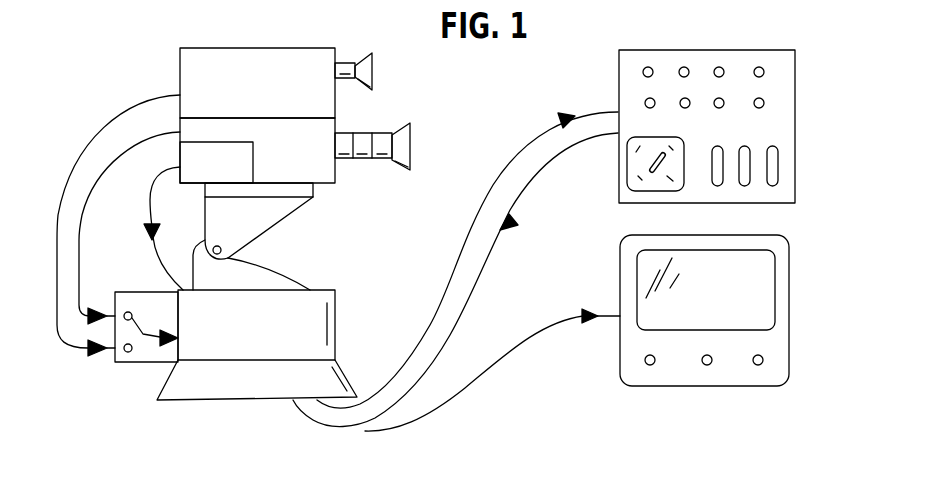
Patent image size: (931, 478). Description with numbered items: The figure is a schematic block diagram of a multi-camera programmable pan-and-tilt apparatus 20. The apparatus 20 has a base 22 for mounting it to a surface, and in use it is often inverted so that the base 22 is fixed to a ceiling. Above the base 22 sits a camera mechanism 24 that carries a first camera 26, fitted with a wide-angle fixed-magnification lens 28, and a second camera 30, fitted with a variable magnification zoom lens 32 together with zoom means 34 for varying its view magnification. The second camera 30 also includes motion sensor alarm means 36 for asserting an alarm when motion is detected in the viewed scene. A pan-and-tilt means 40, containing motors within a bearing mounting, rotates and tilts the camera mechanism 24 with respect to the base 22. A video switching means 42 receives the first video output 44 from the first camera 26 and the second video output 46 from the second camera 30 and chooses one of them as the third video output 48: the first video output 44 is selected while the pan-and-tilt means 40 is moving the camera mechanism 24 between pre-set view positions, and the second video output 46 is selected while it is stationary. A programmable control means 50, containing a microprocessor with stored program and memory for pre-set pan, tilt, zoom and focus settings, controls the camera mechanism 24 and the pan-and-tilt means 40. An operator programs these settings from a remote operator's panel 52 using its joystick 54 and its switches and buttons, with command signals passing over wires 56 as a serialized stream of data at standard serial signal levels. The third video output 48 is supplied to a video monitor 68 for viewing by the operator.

The multi-camera programmable pan-and-tilt apparatus 20 is at (125, 76).
The base 22 is at (188, 393).
The camera mechanism 24 is at (328, 198).
The first camera 26 is at (289, 52).
The wide-angle fixed-magnification lens 28 is at (372, 71).
The second camera 30 is at (328, 170).
The variable magnification zoom lens 32 is at (408, 135).
The zoom means 34 is at (363, 138).
The motion sensor alarm means 36 is at (243, 164).
The pan-and-tilt means 40 is at (266, 250).
The video switching means 42 is at (151, 282).
The first video output 44 is at (100, 125).
The second video output 46 is at (100, 178).
The third video output 48 is at (152, 328).
The programmable control means 50 is at (337, 322).
The remote operator's panel 52 is at (713, 52).
The joystick 54 is at (655, 150).
The wires 56 is at (495, 282).
The video monitor 68 is at (628, 348).